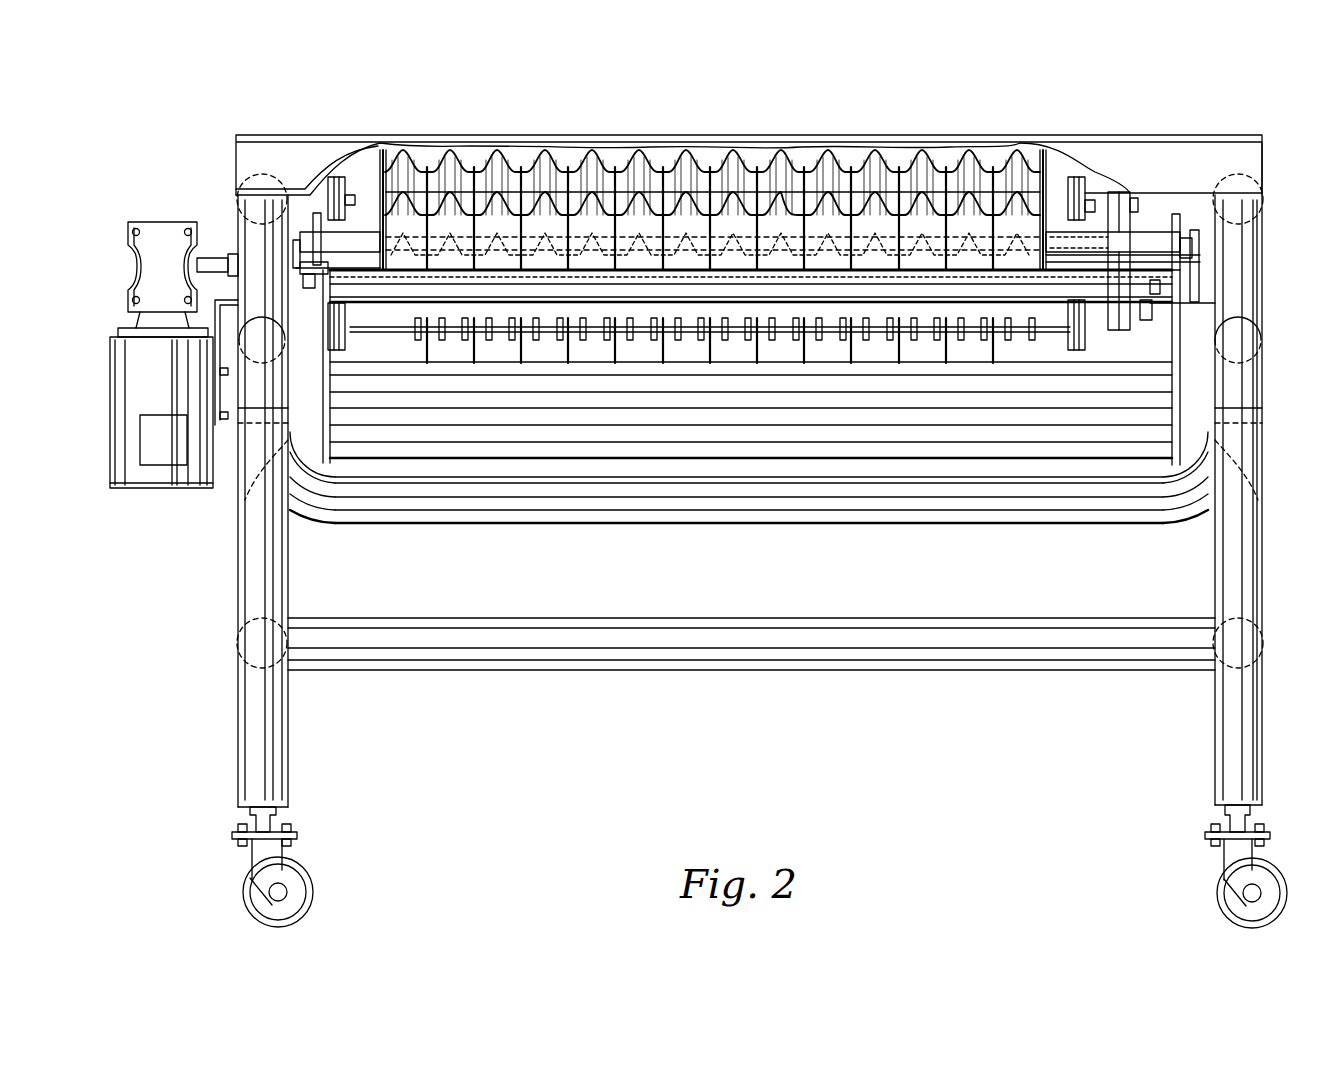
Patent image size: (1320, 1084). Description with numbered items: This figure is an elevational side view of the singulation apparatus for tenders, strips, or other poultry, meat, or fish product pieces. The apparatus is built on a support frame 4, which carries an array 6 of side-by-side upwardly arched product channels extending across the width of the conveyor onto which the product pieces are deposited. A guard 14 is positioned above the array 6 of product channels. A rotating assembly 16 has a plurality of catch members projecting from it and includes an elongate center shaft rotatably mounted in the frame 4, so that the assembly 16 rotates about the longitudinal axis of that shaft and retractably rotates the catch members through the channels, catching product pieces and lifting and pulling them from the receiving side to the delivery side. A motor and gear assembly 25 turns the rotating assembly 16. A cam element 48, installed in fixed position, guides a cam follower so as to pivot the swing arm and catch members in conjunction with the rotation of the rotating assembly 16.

The guard 14 is at (291, 135).
The array of product channels 6 is at (774, 178).
The cam element 48 is at (1113, 192).
The rotating assembly 16 is at (1150, 232).
The support frame 4 is at (256, 738).
The motor and gear assembly 25 is at (135, 445).